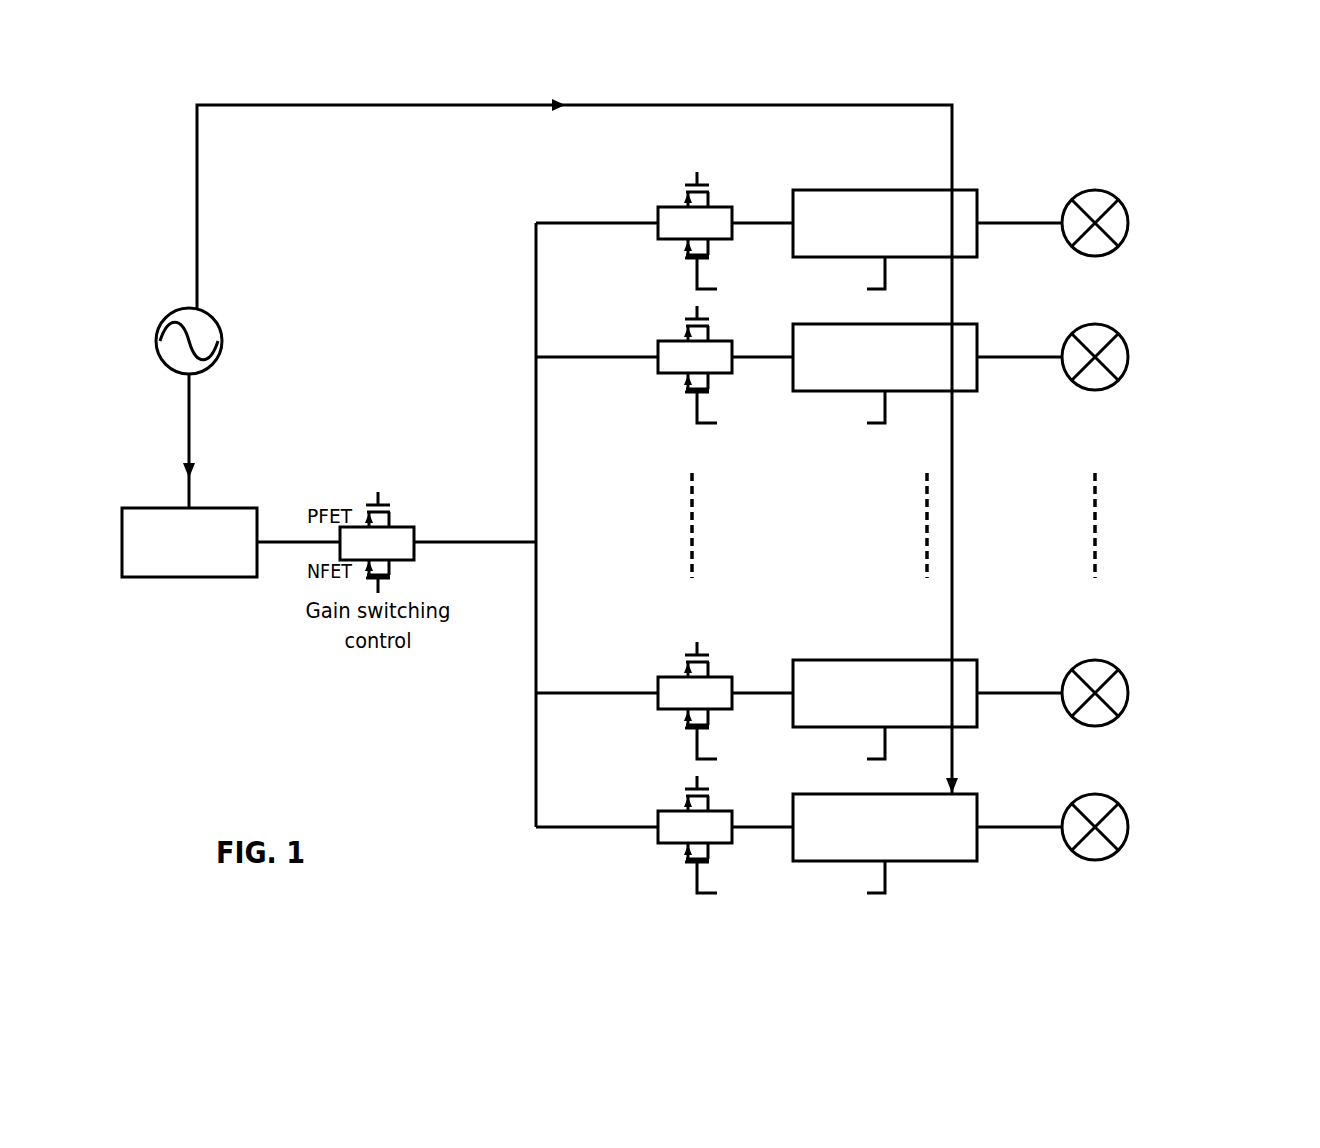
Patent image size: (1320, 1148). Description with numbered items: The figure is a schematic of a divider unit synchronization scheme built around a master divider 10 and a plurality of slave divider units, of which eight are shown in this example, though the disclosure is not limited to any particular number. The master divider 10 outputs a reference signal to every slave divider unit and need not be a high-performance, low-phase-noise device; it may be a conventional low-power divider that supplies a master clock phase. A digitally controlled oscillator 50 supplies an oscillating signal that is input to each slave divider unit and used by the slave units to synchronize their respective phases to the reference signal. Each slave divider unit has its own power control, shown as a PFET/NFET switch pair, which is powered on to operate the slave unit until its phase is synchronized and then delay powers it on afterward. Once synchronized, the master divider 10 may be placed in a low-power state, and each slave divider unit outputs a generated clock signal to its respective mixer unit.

The master divider 10 is at (230, 508).
The digitally controlled oscillator 50 is at (222, 342).